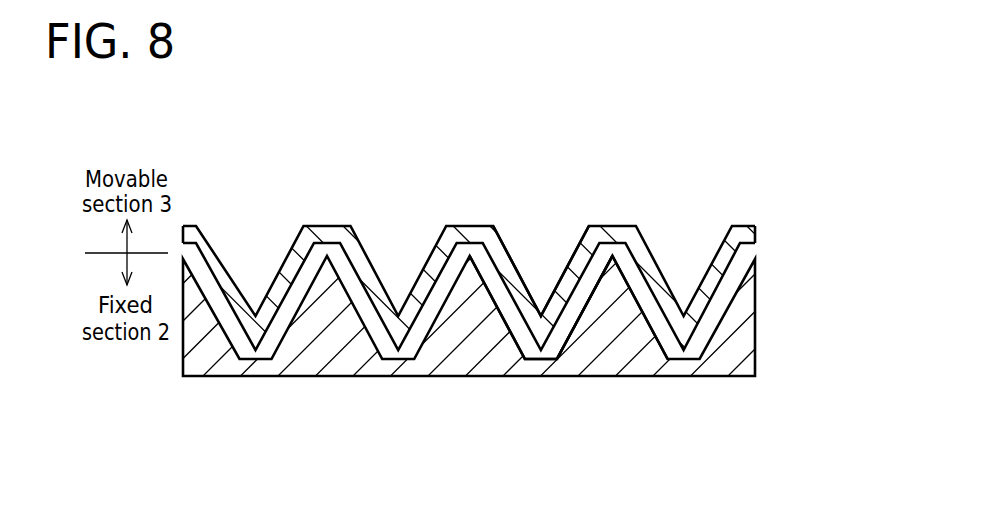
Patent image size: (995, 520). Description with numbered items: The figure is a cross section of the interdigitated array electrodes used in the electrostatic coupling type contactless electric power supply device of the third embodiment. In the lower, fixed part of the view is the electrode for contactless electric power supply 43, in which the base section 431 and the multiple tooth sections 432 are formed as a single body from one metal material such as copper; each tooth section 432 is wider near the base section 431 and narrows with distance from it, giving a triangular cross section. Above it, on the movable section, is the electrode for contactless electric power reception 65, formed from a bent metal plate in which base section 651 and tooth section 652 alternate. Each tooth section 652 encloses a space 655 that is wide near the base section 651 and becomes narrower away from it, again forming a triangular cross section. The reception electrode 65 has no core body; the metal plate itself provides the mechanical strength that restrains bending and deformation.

The electrode for contactless electric power supply 43 is at (485, 341).
The base section 431 is at (541, 362).
The tooth section 432 is at (615, 303).
The electrode for contactless electric power reception 65 is at (462, 240).
The base section 651 is at (611, 226).
The tooth section 652 is at (574, 272).
The space 655 is at (541, 263).